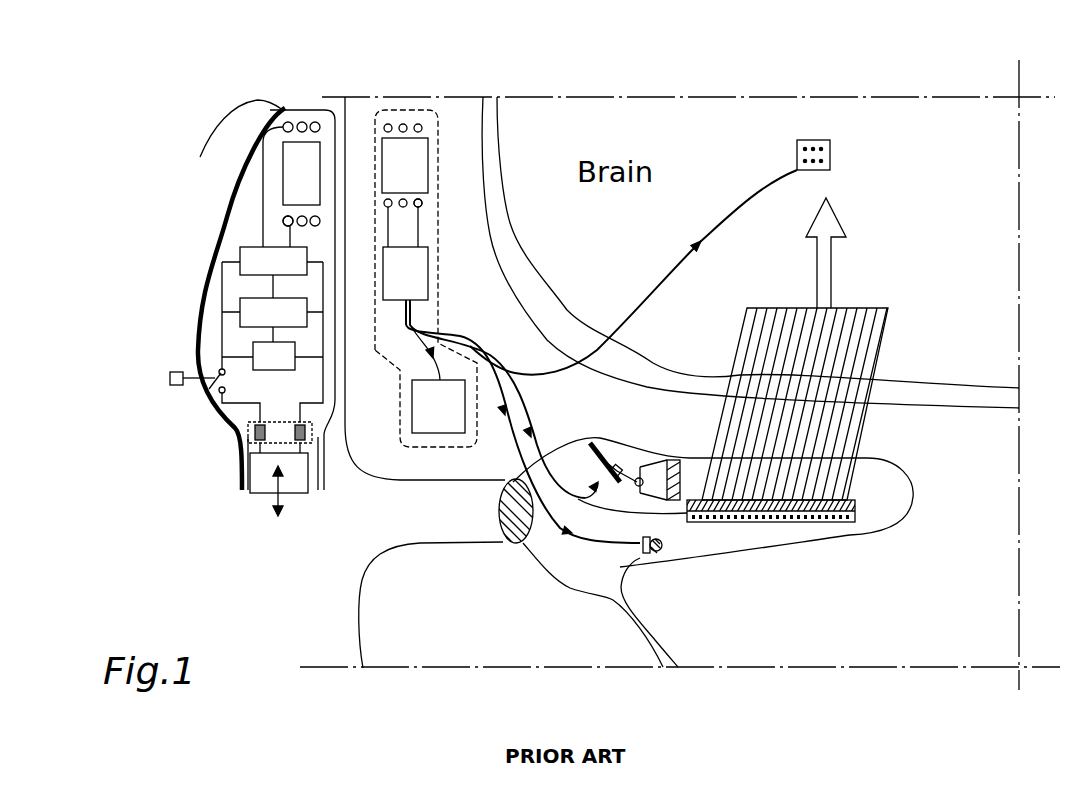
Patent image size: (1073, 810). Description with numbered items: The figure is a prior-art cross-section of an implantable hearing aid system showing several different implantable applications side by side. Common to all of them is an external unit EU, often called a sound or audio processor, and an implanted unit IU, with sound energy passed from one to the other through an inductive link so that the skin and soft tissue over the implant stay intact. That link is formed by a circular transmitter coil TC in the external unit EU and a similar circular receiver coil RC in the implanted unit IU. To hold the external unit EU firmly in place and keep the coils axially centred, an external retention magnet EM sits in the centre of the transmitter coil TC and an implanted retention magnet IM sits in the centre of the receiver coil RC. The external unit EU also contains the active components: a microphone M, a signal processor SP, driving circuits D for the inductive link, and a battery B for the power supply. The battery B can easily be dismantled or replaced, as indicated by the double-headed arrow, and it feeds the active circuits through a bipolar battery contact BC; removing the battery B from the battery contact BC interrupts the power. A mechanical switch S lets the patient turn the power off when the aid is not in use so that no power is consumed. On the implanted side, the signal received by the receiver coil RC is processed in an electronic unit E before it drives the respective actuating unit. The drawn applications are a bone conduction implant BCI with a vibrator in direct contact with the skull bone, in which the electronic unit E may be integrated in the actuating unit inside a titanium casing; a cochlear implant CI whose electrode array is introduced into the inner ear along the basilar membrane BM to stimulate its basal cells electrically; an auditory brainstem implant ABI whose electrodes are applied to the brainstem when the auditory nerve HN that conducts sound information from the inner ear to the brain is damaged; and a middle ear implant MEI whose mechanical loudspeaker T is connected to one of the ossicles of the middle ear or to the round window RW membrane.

The external unit EU is at (306, 107).
The implanted unit IU is at (406, 108).
The receiver coil RC is at (434, 199).
The transmitter coil TC is at (277, 208).
The external retention magnet EM is at (301, 173).
The implanted retention magnet IM is at (405, 165).
The driving circuits for the inductive link D is at (272, 261).
The signal processor SP is at (272, 301).
The microphone M is at (272, 349).
The mechanical switch S is at (165, 370).
The bipolar battery contact BC is at (248, 431).
The battery B is at (279, 479).
The electronic unit E is at (405, 273).
The bone conduction implant BCI is at (438, 380).
The middle ear implant MEI is at (523, 438).
The auditory brainstem implant ABI is at (681, 257).
The auditory nerve HN is at (835, 258).
The basilar membrane BM is at (847, 500).
The cochlear implant CI is at (743, 523).
The mechanical loudspeaker T is at (603, 463).
The round window RW is at (663, 550).